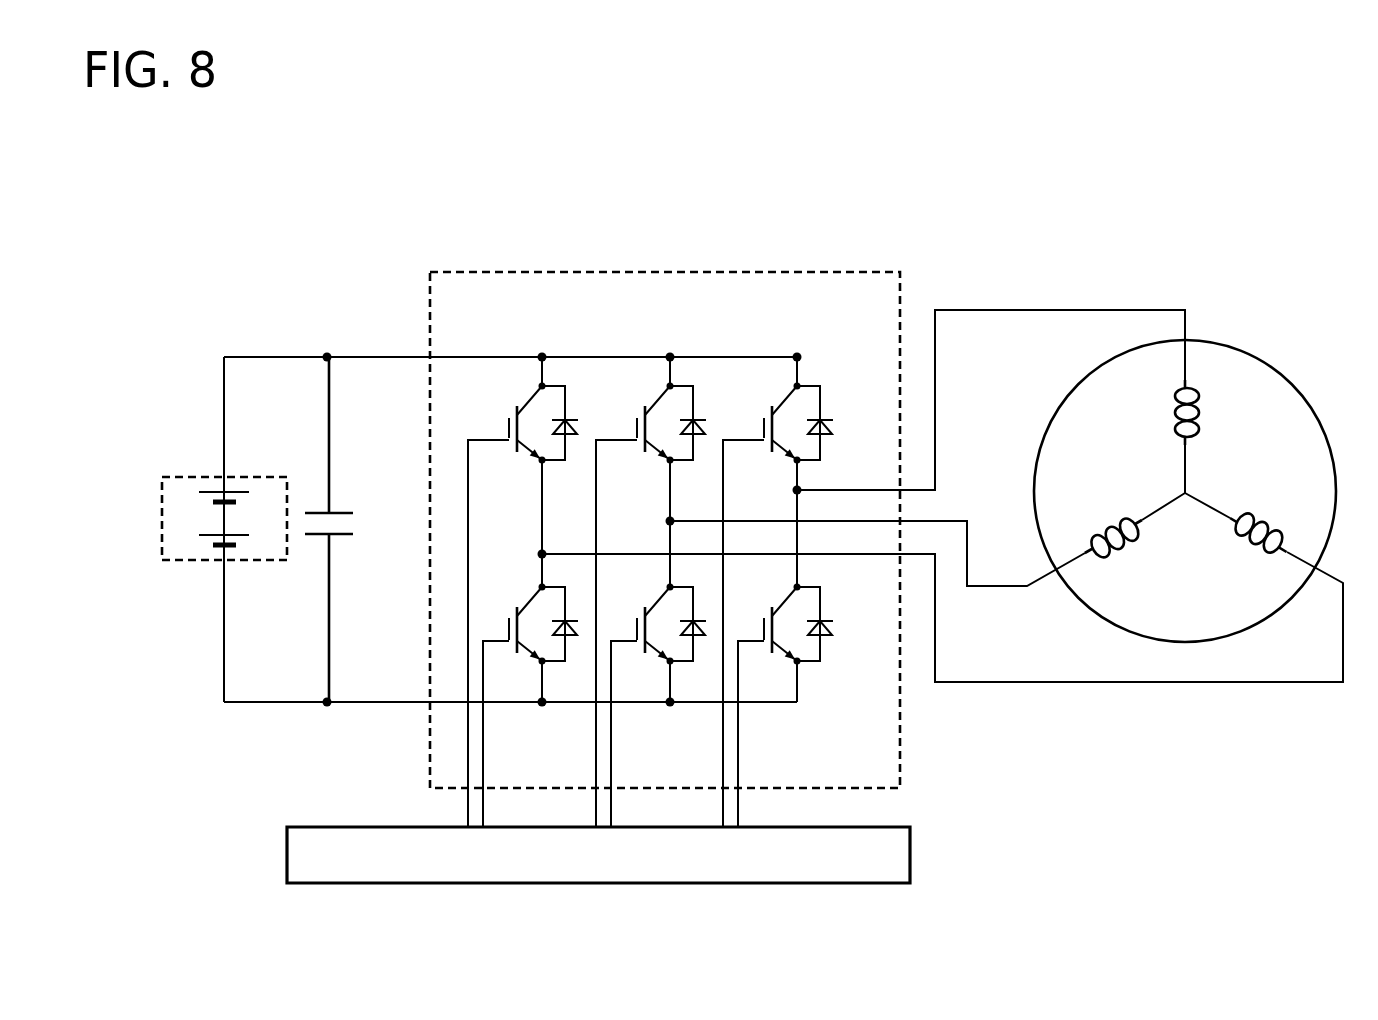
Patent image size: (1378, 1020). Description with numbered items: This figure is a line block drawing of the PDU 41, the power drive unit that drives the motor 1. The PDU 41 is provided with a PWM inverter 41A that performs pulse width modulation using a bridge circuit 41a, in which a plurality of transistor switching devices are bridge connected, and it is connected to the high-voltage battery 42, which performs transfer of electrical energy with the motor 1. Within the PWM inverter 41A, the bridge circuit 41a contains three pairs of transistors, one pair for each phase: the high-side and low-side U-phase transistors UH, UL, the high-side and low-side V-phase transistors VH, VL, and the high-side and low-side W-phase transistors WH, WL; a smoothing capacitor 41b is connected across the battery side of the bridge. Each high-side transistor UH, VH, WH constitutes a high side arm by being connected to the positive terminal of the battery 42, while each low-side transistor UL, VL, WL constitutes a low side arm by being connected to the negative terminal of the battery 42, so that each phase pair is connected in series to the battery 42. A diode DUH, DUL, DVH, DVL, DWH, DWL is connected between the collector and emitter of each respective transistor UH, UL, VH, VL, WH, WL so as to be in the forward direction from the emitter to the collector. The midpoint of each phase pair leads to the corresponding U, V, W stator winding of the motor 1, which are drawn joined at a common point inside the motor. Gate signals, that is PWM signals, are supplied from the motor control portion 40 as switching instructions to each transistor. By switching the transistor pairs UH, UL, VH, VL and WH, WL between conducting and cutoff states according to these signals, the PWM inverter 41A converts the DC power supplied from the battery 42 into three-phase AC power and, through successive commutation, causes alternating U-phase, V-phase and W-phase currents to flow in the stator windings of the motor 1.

The motor 1 is at (1252, 352).
The motor control portion 40 is at (910, 853).
The PDU 41 is at (372, 272).
The PWM inverter 41A is at (378, 340).
The bridge circuit 41a is at (835, 270).
The smoothing capacitor 41b is at (338, 512).
The battery 42 is at (175, 470).
The high-side W-phase transistor WH is at (517, 410).
The diode DWH is at (578, 424).
The low-side W-phase transistor WL is at (517, 652).
The diode DWL is at (578, 637).
The high-side V-phase transistor VH is at (645, 410).
The diode DVH is at (706, 424).
The low-side V-phase transistor VL is at (645, 652).
The diode DVL is at (706, 637).
The high-side U-phase transistor UH is at (772, 410).
The diode DUH is at (833, 428).
The low-side U-phase transistor UL is at (772, 652).
The diode DUL is at (833, 637).
The U-phase U is at (1196, 408).
The V-phase V is at (1108, 528).
The W-phase W is at (1284, 540).